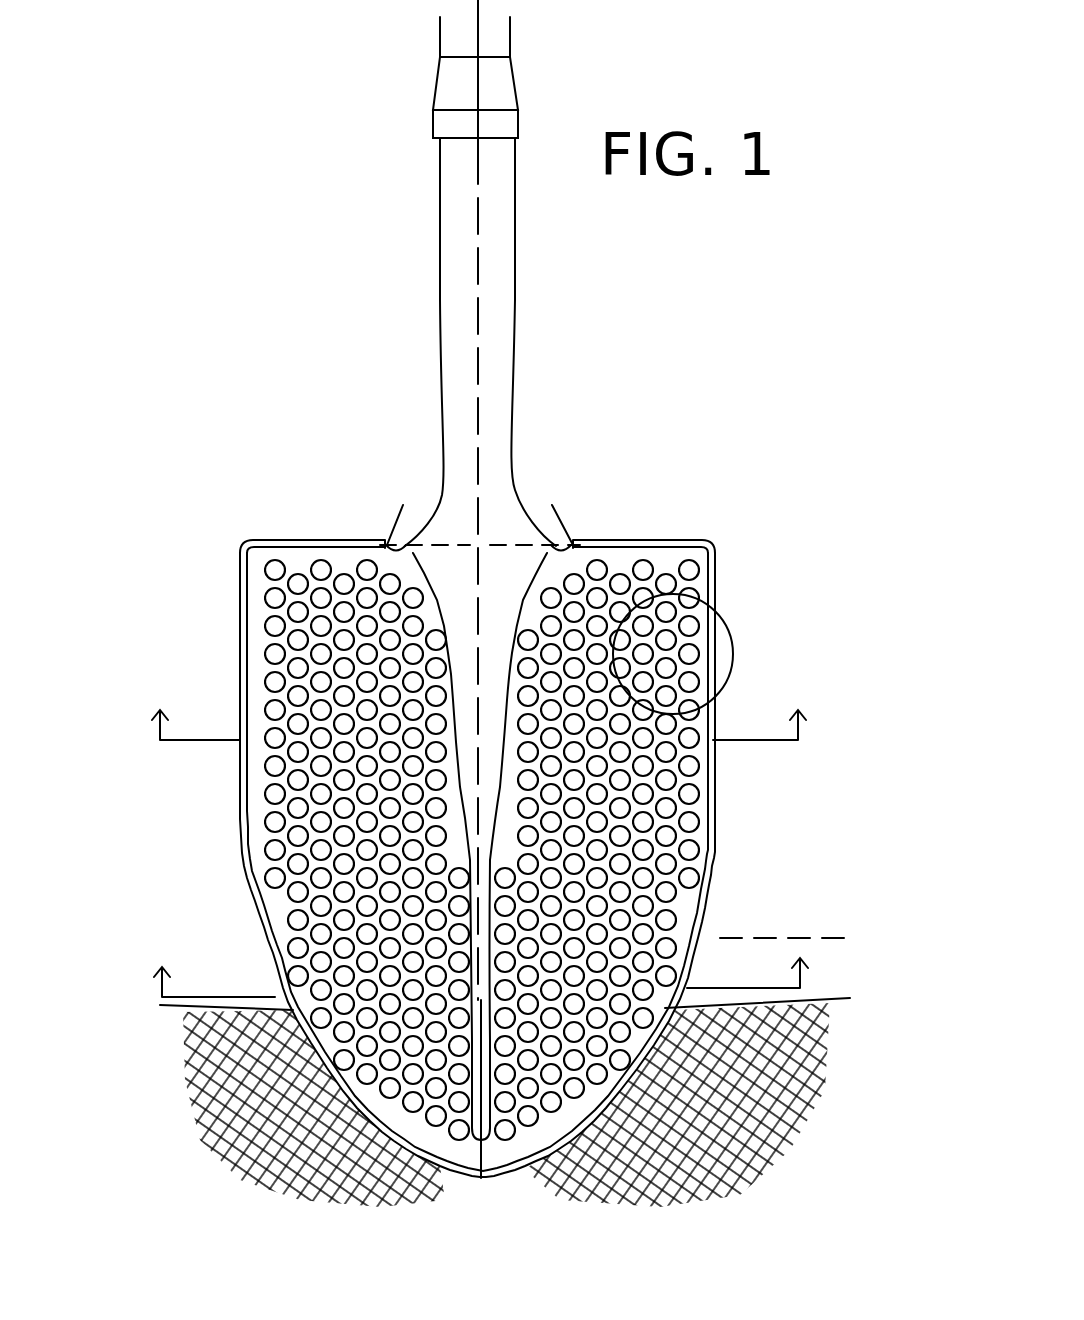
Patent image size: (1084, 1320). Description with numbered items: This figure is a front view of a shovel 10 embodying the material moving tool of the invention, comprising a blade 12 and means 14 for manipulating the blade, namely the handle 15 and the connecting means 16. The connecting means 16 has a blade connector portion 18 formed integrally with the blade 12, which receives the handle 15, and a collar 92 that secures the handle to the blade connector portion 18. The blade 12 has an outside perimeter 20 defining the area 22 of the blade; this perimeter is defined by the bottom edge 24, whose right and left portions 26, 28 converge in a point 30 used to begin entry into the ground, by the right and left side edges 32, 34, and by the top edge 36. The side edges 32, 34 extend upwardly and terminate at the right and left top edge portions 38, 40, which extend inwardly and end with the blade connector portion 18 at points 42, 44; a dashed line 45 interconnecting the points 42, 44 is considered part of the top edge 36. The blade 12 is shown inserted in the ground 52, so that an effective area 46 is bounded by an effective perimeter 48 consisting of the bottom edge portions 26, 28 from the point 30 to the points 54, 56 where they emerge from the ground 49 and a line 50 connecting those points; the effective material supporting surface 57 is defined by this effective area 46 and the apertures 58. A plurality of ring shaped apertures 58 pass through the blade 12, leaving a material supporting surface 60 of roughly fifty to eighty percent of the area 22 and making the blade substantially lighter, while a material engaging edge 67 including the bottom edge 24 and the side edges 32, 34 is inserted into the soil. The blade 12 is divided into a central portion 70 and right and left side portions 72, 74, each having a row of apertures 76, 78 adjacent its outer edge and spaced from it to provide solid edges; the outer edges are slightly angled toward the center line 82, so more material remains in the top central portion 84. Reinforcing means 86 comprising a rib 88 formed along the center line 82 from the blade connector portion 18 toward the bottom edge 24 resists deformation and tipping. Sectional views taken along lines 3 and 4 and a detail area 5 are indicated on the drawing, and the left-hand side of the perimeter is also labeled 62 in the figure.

The shovel 10 is at (175, 410).
The blade 12 is at (240, 593).
The means for manipulating the blade 14 is at (385, 365).
The handle 15 is at (442, 47).
The connecting means 16 is at (517, 263).
The blade connector portion 18 is at (517, 332).
The outside perimeter 20 is at (247, 657).
The area of the blade 22 is at (277, 908).
The bottom edge 24 is at (293, 1027).
The right portion of the bottom edge 26 is at (650, 1053).
The left portion of the bottom edge 28 is at (330, 1080).
The point 30 is at (487, 1177).
The right side edge 32 is at (713, 768).
The left side edge 34 is at (243, 782).
The top edge 36 is at (658, 533).
The right top edge portion 38 is at (683, 533).
The left top edge portion 40 is at (277, 540).
The point 42 is at (552, 505).
The point 44 is at (403, 505).
The dashed line 45 is at (480, 545).
The effective area 46 is at (545, 1125).
The effective perimeter 48 is at (355, 1140).
The ground 49 is at (178, 1018).
The line 50 is at (850, 938).
The ground 52 is at (170, 1096).
The point 54 is at (785, 990).
The point 56 is at (180, 1012).
The effective material supporting surface 57 is at (427, 1128).
The ring shaped apertures 58 is at (690, 878).
The material supporting surface 60 is at (580, 1107).
The blade rim 62 is at (258, 810).
The material engaging edge 67 is at (600, 1140).
The central portion 70 is at (507, 858).
The right side portion 72 is at (690, 752).
The left side portion 74 is at (297, 717).
The row of apertures 76 is at (685, 553).
The row of apertures 78 is at (273, 570).
The center line 82 is at (477, 290).
The top central portion 84 is at (453, 572).
The reinforcing means 86 is at (490, 765).
The rib 88 is at (500, 623).
The collar 92 is at (517, 95).
The detail circle 5 is at (730, 620).
The section line 3 is at (480, 719).
The section line 4 is at (480, 974).